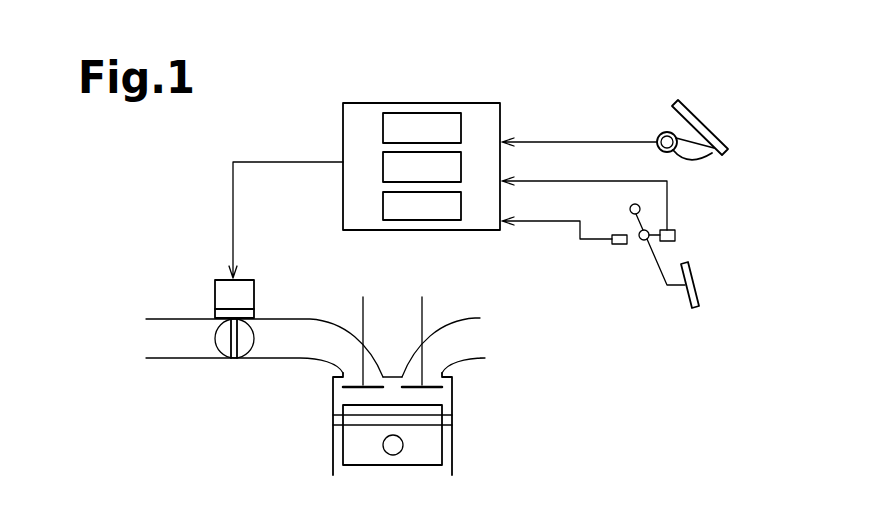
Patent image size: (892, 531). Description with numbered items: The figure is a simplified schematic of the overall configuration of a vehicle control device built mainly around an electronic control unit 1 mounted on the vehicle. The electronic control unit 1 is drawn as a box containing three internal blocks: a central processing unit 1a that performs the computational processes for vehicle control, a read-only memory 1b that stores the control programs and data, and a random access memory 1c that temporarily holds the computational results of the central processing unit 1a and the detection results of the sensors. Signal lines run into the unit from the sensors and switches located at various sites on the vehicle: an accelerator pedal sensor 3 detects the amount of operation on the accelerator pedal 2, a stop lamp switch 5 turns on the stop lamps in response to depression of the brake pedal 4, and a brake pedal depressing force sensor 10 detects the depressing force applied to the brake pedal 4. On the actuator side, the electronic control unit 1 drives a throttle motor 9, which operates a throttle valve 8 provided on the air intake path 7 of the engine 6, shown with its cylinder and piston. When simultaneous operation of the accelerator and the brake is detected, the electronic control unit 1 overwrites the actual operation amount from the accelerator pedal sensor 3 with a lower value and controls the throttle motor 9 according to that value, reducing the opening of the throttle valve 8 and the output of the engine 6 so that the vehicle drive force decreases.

The electronic control unit 1 is at (443, 166).
The central processing unit 1a is at (462, 128).
The read-only memory 1b is at (462, 166).
The random access memory 1c is at (462, 205).
The accelerator pedal 2 is at (707, 131).
The accelerator pedal sensor 3 is at (667, 132).
The brake pedal 4 is at (700, 297).
The stop lamp switch 5 is at (677, 237).
The engine 6 is at (455, 445).
The air intake path 7 is at (262, 360).
The throttle valve 8 is at (255, 338).
The throttle motor 9 is at (255, 290).
The brake pedal depressing force sensor 10 is at (620, 250).